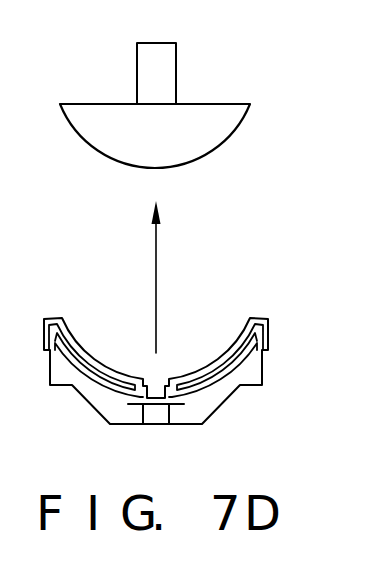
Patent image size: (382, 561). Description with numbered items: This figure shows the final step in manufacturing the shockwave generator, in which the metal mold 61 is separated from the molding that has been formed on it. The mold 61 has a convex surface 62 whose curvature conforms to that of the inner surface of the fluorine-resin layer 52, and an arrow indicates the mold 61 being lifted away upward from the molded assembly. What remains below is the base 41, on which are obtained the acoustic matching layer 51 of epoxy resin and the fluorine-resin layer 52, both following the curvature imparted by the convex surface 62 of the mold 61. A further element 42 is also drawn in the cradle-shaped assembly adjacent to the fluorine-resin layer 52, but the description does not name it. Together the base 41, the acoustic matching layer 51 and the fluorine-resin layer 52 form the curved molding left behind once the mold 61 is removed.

The base 41 is at (263, 378).
The liner 42 is at (254, 352).
The acoustic matching layer 51 is at (188, 390).
The fluorine-resin layer 52 is at (214, 388).
The metal mold 61 is at (213, 113).
The convex surface 62 is at (213, 152).